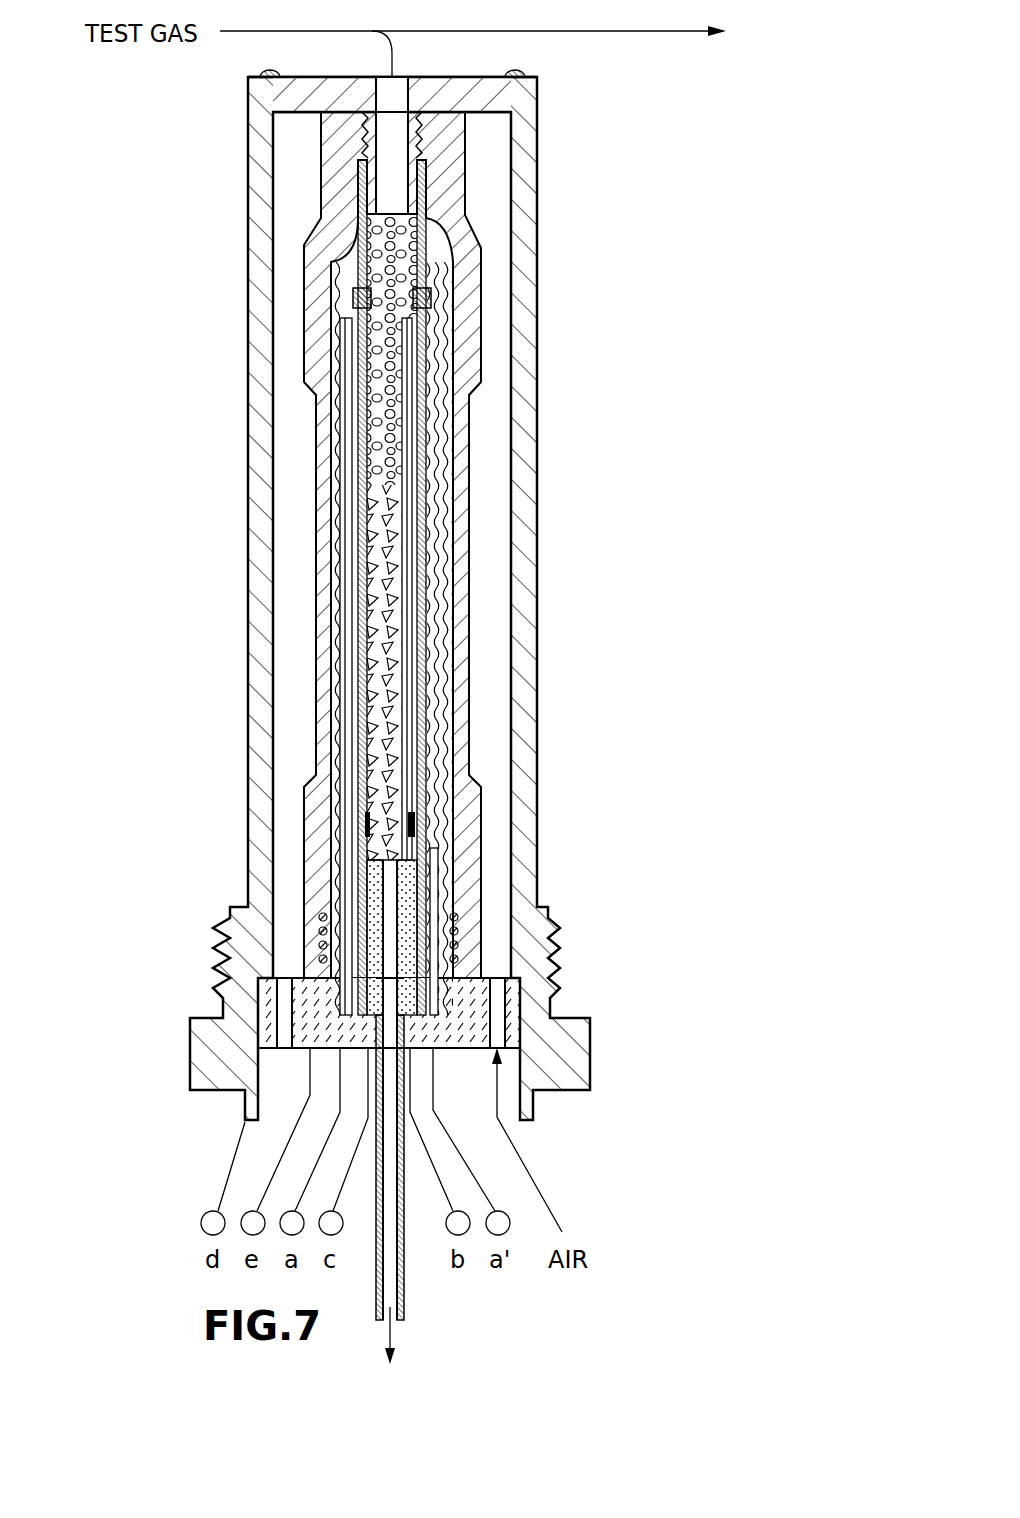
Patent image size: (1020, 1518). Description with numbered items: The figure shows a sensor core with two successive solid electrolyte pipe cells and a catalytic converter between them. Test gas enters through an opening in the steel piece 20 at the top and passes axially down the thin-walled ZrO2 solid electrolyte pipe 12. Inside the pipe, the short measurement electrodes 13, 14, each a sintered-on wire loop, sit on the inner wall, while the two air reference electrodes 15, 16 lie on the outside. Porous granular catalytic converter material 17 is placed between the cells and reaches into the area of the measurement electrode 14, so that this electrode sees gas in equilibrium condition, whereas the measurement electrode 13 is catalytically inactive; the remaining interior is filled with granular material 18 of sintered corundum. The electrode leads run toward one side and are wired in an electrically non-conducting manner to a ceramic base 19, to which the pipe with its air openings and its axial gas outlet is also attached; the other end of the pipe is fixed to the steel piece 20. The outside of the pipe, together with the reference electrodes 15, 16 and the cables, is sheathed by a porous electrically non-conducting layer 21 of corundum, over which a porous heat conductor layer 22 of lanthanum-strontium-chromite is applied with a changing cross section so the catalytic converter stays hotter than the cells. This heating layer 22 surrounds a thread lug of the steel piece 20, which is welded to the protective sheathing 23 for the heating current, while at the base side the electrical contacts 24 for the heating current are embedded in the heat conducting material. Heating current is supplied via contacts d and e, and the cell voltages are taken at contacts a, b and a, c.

The solid electrolyte pipe 12 is at (440, 232).
The measurement electrode 13 is at (426, 309).
The measurement electrode 14 is at (432, 812).
The air reference electrode 15 is at (428, 296).
The air reference electrode 16 is at (427, 828).
The porous granular catalytic converter material 17 is at (390, 622).
The granular material 18 is at (421, 265).
The ceramic base 19 is at (513, 1013).
The steel piece 20 is at (493, 107).
The porous electrically non-conducting layer 21 is at (442, 435).
The porous heat conductor layer 22 is at (468, 555).
The protective sheathing 23 is at (520, 150).
The electrical contacts 24 is at (458, 945).